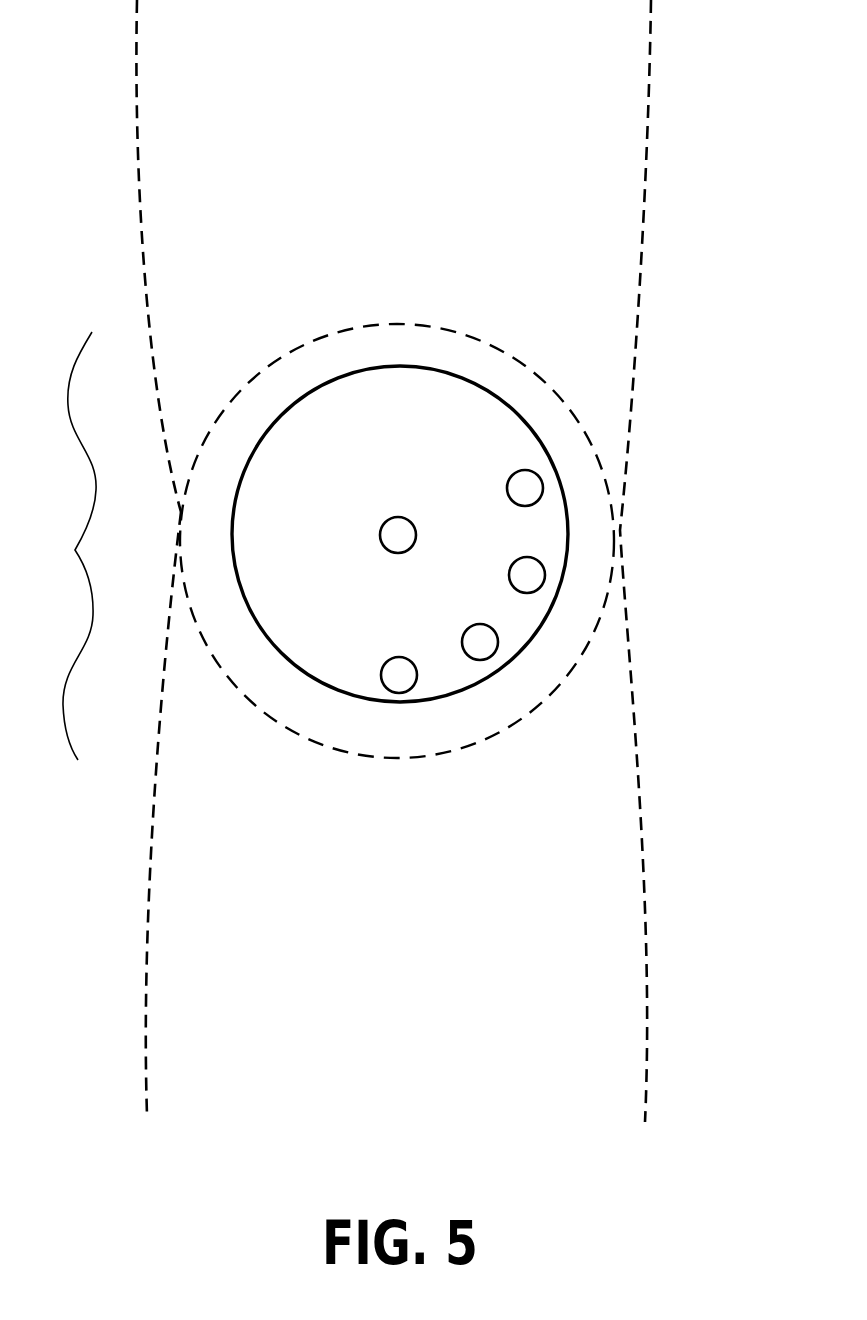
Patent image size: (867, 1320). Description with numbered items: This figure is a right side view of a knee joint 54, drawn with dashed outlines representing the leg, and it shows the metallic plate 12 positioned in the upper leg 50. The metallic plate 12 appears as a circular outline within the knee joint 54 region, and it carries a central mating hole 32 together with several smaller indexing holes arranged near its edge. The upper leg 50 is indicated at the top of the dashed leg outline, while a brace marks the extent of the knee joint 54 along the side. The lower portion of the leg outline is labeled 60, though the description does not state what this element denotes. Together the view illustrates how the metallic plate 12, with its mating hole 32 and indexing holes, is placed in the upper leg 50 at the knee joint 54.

The metallic plate 12 is at (391, 425).
The mating hole 32 is at (403, 541).
The upper leg 50 is at (272, 187).
The knee joint 54 is at (58, 546).
The lower surface line 60 is at (243, 865).